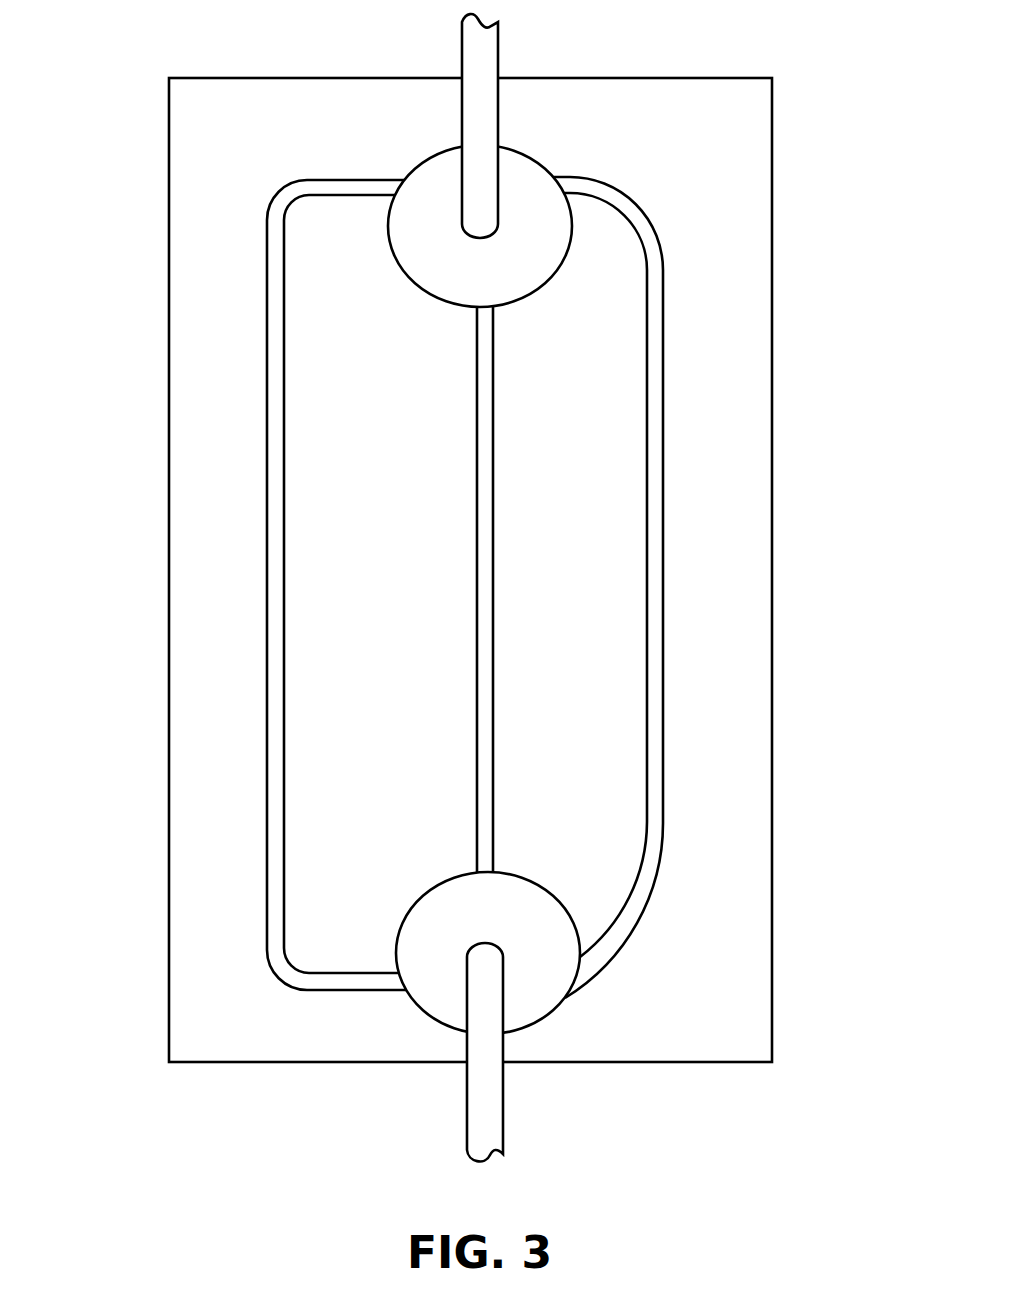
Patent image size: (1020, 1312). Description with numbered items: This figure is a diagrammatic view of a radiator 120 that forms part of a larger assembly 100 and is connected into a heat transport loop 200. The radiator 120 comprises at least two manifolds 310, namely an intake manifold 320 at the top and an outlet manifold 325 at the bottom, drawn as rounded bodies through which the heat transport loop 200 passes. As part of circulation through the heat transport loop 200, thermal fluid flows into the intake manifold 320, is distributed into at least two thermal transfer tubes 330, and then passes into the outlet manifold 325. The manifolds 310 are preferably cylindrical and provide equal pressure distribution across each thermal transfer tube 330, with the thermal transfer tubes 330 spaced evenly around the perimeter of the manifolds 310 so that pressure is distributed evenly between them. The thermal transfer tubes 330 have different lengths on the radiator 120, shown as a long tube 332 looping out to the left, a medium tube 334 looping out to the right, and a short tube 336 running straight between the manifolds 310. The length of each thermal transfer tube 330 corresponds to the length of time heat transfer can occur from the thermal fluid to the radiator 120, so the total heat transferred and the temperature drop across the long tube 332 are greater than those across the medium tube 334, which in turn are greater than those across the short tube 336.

The assembly 100 is at (127, 42).
The radiator 120 is at (161, 159).
The heat transport loop 200 is at (498, 62).
The manifolds 310 is at (483, 577).
The intake manifold 320 is at (522, 302).
The outlet manifold 325 is at (553, 1010).
The thermal transfer tubes 330 is at (511, 587).
The long tube 332 is at (285, 568).
The medium tube 334 is at (663, 502).
The short tube 336 is at (493, 449).